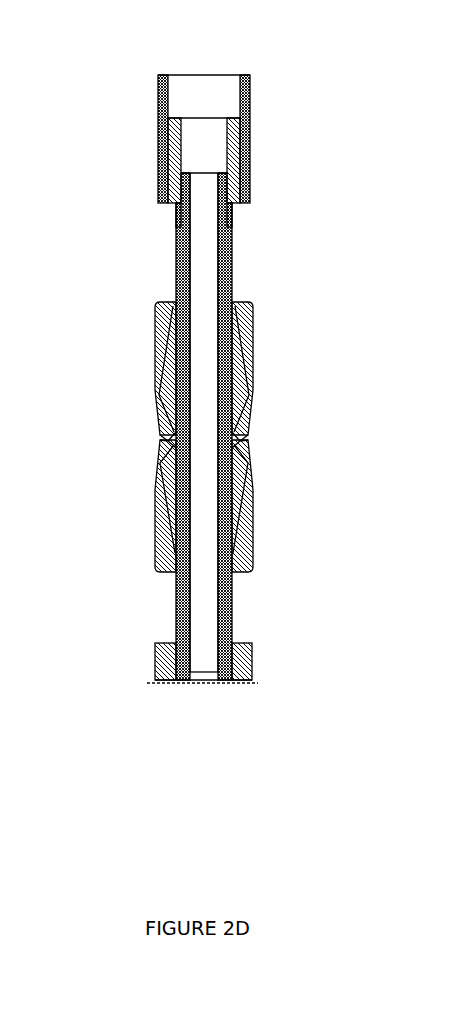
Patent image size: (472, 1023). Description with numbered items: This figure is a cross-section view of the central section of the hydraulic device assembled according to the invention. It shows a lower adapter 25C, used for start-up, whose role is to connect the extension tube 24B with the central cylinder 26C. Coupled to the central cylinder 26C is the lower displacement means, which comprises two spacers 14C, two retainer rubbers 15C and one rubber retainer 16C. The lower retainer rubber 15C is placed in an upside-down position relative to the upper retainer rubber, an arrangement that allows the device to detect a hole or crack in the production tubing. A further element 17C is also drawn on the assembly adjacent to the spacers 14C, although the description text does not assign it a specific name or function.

The extension tube 24B is at (246, 92).
The lower adapter 25C is at (247, 195).
The spacer 14C is at (177, 630).
The collar ring 17C is at (173, 217).
The retainer rubber 15C is at (170, 555).
The rubber retainer 16C is at (172, 441).
The central cylinder 26C is at (220, 587).